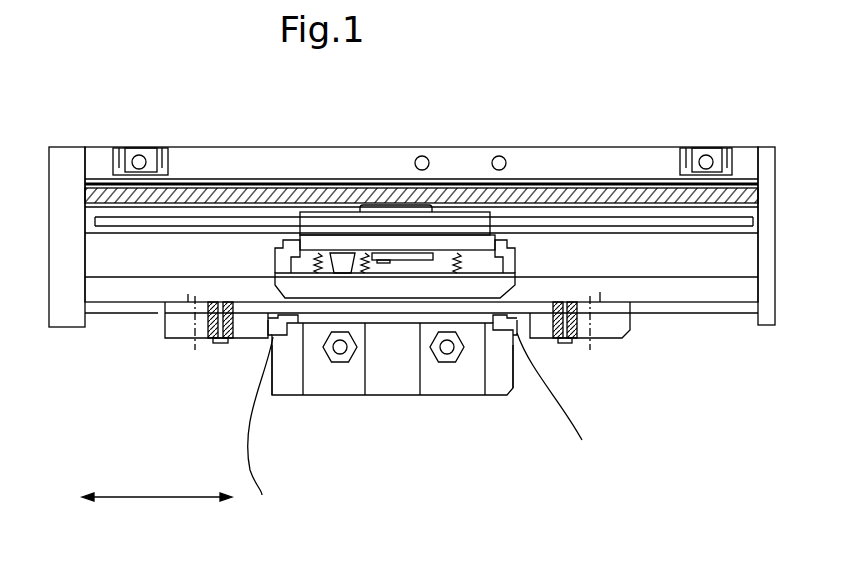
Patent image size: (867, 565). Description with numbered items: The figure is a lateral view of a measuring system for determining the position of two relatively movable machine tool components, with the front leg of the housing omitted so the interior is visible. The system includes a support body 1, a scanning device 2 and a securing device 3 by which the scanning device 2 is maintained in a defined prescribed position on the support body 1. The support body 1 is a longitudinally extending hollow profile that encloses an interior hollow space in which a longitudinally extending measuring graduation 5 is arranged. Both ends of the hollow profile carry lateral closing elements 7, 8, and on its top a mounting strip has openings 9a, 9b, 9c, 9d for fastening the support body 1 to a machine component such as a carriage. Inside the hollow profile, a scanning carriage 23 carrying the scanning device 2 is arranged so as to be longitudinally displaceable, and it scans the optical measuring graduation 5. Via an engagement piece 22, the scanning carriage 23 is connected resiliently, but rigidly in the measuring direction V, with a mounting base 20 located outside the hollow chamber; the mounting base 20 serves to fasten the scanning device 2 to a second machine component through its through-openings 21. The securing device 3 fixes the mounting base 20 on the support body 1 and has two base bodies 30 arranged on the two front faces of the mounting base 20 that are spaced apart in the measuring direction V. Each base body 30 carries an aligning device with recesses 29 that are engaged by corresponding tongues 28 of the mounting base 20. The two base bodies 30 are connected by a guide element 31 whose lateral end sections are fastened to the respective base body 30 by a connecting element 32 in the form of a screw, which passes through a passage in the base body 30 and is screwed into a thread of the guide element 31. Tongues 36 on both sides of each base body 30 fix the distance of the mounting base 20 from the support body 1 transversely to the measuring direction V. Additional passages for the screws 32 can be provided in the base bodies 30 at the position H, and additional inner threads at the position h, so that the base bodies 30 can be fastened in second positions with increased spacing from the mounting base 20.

The support body 1 is at (718, 252).
The scanning device 2 is at (424, 193).
The securing device 3 is at (153, 355).
The measuring graduation 5 is at (737, 218).
The lateral closing element 7 is at (72, 160).
The lateral closing element 8 is at (767, 160).
The opening 9a is at (138, 150).
The opening 9b is at (420, 155).
The opening 9c is at (500, 155).
The opening 9d is at (708, 150).
The mounting base 20 is at (397, 368).
The through-opening 21 is at (357, 395).
The engagement piece 22 is at (273, 277).
The scanning carriage 23 is at (440, 232).
The tongue 28 is at (273, 395).
The recess 29 is at (430, 430).
The base body 30 is at (165, 332).
The guide element 31 is at (633, 313).
The connecting element 32 is at (217, 343).
The tongue 36 is at (270, 333).
The position h is at (157, 318).
The position H is at (195, 345).
The measuring direction V is at (157, 478).